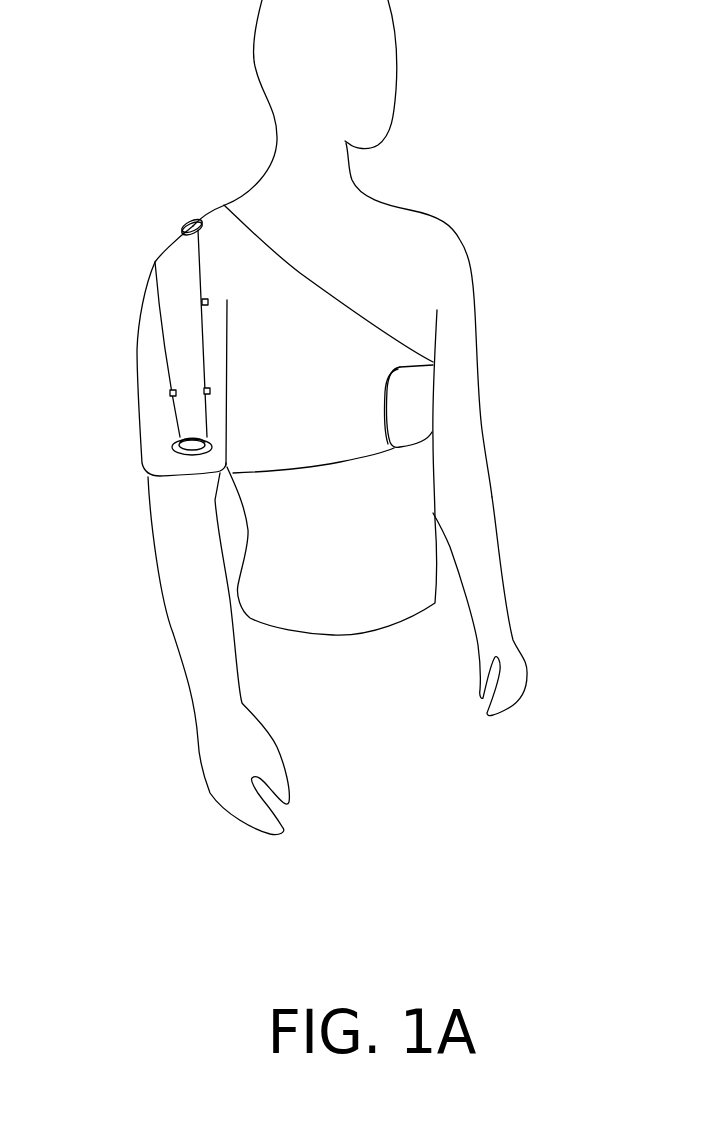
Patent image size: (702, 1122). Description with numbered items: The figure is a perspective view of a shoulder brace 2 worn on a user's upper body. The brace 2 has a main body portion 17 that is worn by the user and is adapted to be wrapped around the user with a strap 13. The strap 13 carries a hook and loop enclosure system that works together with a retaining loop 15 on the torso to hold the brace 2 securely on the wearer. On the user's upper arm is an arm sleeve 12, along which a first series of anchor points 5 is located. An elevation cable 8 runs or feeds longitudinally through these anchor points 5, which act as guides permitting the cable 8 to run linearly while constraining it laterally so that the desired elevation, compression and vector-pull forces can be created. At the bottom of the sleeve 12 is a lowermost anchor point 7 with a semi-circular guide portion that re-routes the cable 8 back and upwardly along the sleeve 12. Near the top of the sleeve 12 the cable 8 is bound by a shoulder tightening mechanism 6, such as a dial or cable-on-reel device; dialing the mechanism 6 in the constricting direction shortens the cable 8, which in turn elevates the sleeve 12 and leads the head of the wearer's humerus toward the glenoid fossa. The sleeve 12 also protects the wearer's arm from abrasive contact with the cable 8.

The shoulder brace 2 is at (170, 170).
The first series of anchor points 5 is at (203, 390).
The shoulder tightening mechanism 6 is at (188, 222).
The lowermost anchor point 7 is at (182, 450).
The elevation cable 8 is at (200, 273).
The arm sleeve 12 is at (182, 322).
The strap 13 is at (410, 390).
The retaining loop 15 is at (435, 383).
The main body portion 17 is at (328, 435).